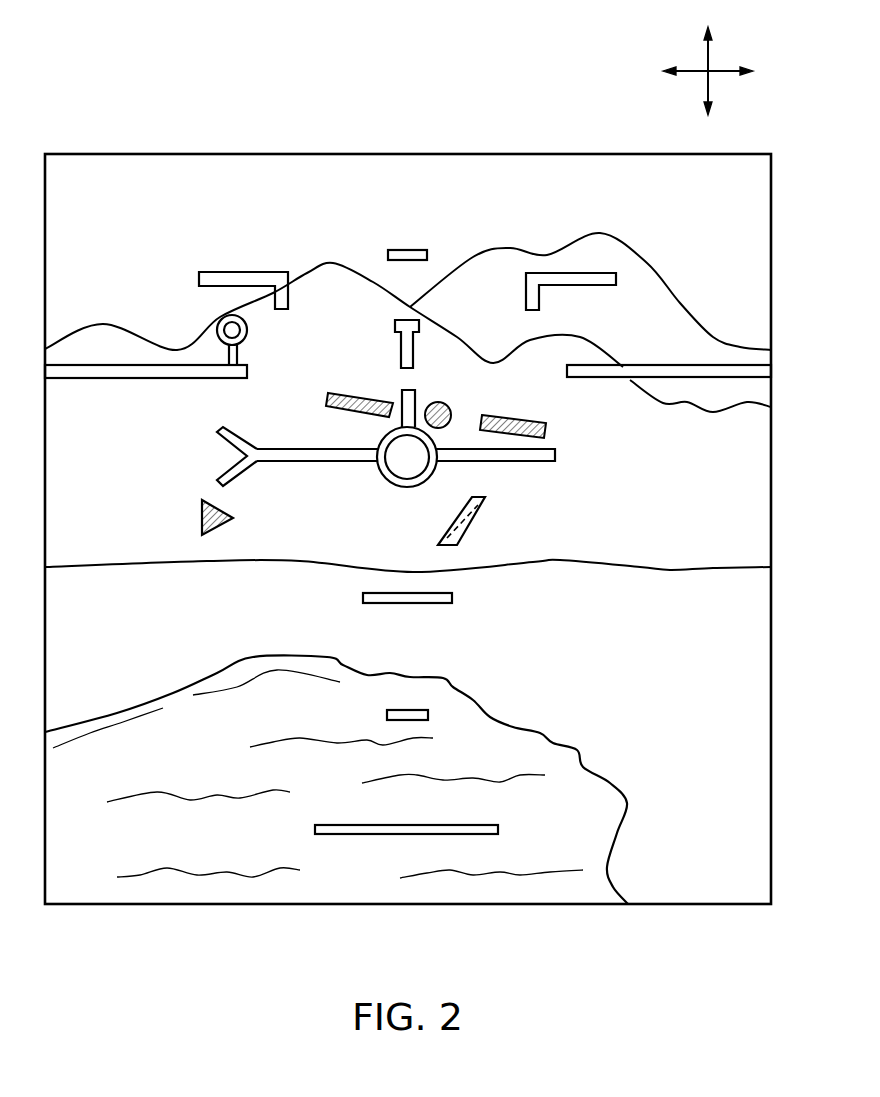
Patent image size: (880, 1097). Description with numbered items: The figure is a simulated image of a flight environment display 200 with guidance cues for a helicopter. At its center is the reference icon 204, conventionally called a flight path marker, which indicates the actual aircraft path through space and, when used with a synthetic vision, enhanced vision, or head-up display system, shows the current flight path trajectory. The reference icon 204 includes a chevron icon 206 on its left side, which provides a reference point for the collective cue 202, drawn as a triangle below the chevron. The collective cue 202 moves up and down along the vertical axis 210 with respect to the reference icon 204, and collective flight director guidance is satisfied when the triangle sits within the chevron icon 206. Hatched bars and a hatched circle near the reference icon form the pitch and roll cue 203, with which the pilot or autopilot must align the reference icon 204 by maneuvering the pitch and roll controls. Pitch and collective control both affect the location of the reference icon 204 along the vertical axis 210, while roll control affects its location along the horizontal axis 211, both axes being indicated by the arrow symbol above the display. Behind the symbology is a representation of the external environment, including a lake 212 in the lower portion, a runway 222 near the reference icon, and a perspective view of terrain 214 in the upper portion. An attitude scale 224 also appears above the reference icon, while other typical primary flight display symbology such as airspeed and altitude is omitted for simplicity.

The display image 200 is at (209, 129).
The collective cue 202 is at (200, 517).
The pitch and roll cue 203 is at (327, 400).
The reference icon 204 is at (532, 463).
The chevron icon 206 is at (222, 455).
The vertical axis 210 is at (708, 55).
The horizontal axis 211 is at (690, 68).
The lake 212 is at (577, 750).
The terrain 214 is at (647, 263).
The runway 222 is at (477, 513).
The attitude scale 224 is at (408, 250).